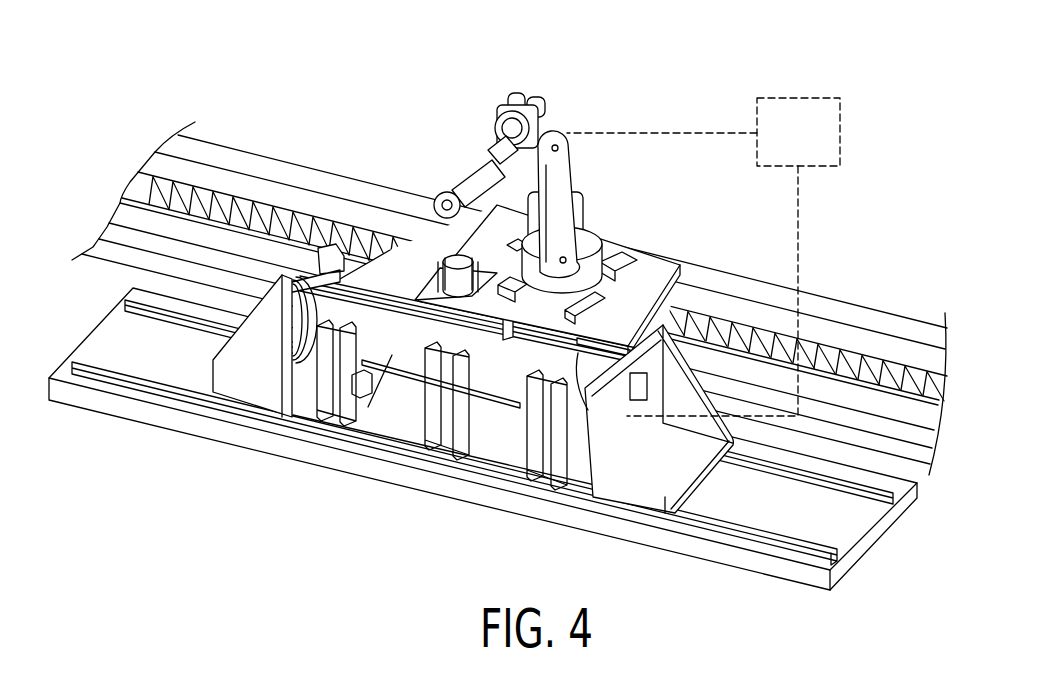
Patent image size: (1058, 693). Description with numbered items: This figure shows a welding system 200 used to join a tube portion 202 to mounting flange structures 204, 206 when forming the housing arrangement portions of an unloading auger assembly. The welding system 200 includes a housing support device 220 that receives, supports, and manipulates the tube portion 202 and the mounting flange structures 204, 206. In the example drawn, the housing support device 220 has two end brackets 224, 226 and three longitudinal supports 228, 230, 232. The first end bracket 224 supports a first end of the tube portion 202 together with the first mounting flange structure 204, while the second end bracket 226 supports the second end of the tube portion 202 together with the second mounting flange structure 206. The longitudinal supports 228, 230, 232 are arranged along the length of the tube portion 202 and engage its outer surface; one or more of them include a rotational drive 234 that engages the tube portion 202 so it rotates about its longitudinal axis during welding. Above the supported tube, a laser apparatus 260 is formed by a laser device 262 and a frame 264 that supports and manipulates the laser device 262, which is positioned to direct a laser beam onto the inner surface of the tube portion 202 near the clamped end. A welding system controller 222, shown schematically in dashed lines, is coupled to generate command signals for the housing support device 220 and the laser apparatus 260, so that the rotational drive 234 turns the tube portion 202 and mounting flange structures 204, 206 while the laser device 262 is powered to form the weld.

The welding system 200 is at (275, 118).
The tube portion 202 is at (376, 400).
The first mounting flange structure 204 is at (575, 452).
The second mounting flange structure 206 is at (293, 360).
The housing support device 220 is at (153, 440).
The welding system controller 222 is at (841, 130).
The first end bracket 224 is at (627, 497).
The second end bracket 226 is at (241, 372).
The longitudinal support 228 is at (521, 428).
The longitudinal support 230 is at (488, 395).
The longitudinal support 232 is at (350, 395).
The rotational drive 234 is at (426, 372).
The laser apparatus 260 is at (540, 91).
The laser device 262 is at (469, 171).
The frame 264 is at (648, 262).